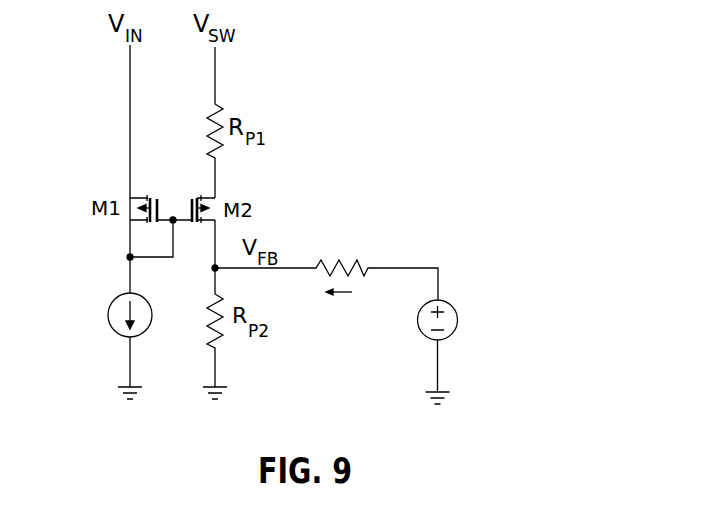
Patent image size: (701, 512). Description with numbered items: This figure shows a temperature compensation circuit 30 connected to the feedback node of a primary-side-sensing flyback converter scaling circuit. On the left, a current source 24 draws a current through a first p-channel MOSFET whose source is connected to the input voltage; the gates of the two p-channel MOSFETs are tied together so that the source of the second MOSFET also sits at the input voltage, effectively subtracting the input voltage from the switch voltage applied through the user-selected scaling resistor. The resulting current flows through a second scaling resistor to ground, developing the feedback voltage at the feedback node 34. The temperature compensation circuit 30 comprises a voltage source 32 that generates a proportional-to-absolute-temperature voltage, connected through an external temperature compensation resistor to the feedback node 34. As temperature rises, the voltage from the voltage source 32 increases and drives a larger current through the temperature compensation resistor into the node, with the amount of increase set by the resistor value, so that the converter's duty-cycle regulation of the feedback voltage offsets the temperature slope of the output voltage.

The current source 24 is at (108, 312).
The temperature compensation circuit 30 is at (411, 218).
The voltage source 32 is at (451, 306).
The VFB node 34 is at (211, 269).